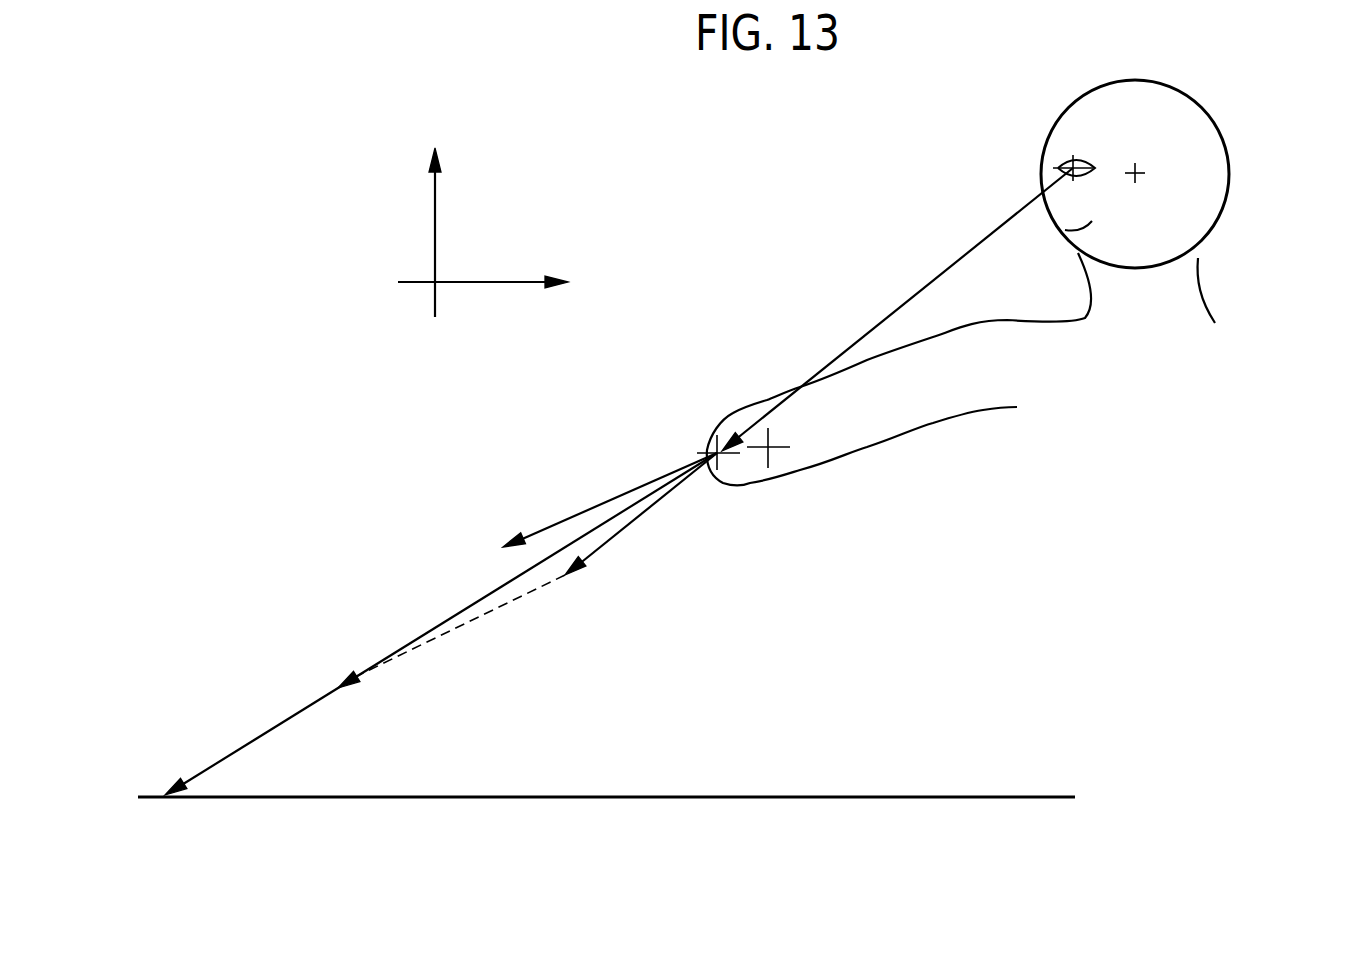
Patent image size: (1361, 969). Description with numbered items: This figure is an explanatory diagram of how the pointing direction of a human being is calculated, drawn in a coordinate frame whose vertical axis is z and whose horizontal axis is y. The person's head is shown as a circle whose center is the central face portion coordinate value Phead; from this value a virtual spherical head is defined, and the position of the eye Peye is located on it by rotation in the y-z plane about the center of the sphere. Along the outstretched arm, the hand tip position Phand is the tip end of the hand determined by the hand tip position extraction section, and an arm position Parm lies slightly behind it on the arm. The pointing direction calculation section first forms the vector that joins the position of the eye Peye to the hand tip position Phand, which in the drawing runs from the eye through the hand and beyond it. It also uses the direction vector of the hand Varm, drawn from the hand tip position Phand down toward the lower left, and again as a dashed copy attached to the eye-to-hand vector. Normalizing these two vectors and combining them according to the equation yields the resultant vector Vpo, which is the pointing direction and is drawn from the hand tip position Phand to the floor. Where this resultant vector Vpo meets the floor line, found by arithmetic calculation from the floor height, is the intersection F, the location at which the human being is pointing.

The position of the eye Peye is at (1036, 164).
The central face portion coordinate value Phead is at (1140, 172).
The hand tip position Phand is at (683, 436).
The arm position Parm is at (718, 452).
The direction vector of the hand Varm is at (536, 566).
The resultant vector Vpo is at (441, 624).
The intersection of the resultant vector and the floor F is at (165, 793).
The z axis z is at (423, 232).
The y axis y is at (487, 312).